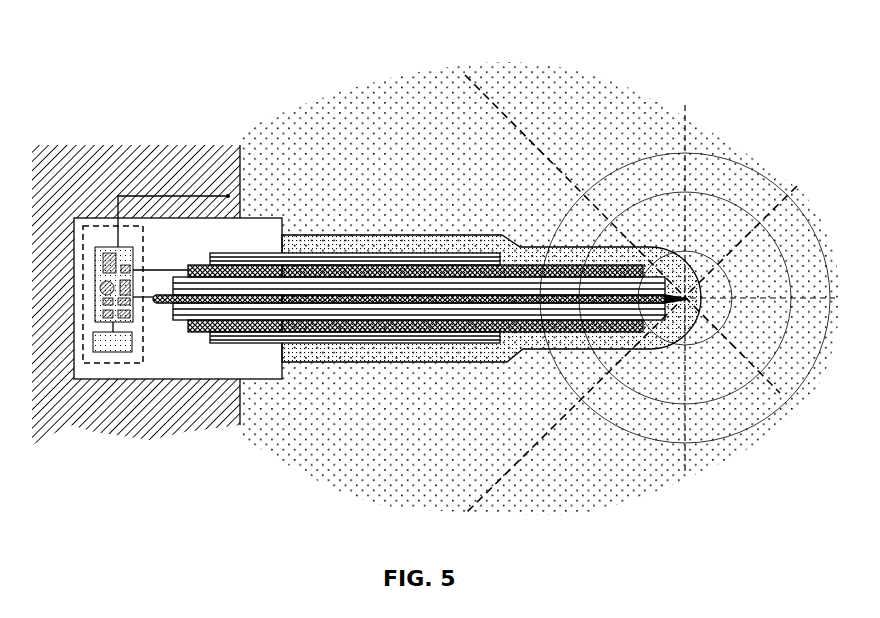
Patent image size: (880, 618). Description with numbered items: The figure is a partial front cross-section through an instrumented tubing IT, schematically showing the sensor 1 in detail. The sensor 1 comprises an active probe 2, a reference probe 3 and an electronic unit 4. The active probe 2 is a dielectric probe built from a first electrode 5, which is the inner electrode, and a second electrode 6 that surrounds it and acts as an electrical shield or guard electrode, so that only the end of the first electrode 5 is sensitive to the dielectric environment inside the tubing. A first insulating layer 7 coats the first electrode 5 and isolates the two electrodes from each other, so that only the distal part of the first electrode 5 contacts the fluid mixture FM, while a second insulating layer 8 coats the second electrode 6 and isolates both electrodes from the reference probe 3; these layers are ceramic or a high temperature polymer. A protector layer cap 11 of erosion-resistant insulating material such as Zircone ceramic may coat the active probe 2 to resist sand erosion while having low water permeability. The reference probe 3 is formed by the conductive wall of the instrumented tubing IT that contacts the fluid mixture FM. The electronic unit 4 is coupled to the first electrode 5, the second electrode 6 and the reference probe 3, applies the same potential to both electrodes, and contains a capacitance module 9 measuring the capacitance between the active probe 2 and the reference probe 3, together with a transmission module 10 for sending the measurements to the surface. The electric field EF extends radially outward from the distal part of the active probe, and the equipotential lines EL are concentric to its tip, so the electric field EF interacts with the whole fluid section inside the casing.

The sensor 1 is at (258, 379).
The active probe 2 is at (662, 308).
The reference probe 3 is at (241, 195).
The electronic unit 4 is at (117, 364).
The first electrode 5 is at (157, 300).
The second electrode 6 is at (188, 266).
The first insulating layer 7 is at (485, 312).
The second insulating layer 8 is at (378, 337).
The capacitance module 9 is at (100, 247).
The transmission module 10 is at (97, 347).
The protector layer cap 11 is at (577, 347).
The instrumented tubing IT is at (53, 413).
The fluid mixture FM is at (400, 195).
The electric field EF is at (515, 128).
The equipotential lines EL is at (718, 153).